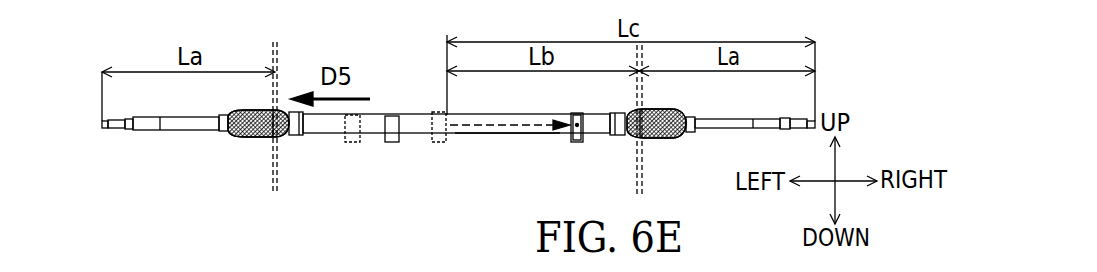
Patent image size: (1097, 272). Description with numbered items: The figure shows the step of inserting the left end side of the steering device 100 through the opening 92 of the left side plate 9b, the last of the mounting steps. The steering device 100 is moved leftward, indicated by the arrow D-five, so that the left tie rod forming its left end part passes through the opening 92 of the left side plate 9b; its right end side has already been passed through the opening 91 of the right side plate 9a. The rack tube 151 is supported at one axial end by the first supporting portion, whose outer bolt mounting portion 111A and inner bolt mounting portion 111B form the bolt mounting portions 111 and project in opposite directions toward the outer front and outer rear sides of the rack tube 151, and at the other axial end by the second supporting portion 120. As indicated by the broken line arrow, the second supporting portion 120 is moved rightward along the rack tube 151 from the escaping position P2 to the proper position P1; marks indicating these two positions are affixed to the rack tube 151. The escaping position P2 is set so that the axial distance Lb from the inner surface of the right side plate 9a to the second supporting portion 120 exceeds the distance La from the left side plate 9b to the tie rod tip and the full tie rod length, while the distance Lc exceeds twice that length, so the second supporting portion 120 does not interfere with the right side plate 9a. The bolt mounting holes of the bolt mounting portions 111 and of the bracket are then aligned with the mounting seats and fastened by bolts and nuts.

The steering device 100 is at (398, 93).
The opening 92 is at (270, 139).
The left side plate 9b is at (272, 180).
The bolt mounting portions 111 is at (376, 168).
The outer bolt mounting portion 111A is at (353, 143).
The inner bolt mounting portion 111B is at (394, 143).
The escaping position P2 is at (442, 143).
The rack tube 151 is at (493, 134).
The proper position P1 is at (575, 143).
The second supporting portion 120 is at (587, 157).
The opening 91 is at (645, 138).
The right side plate 9a is at (645, 174).